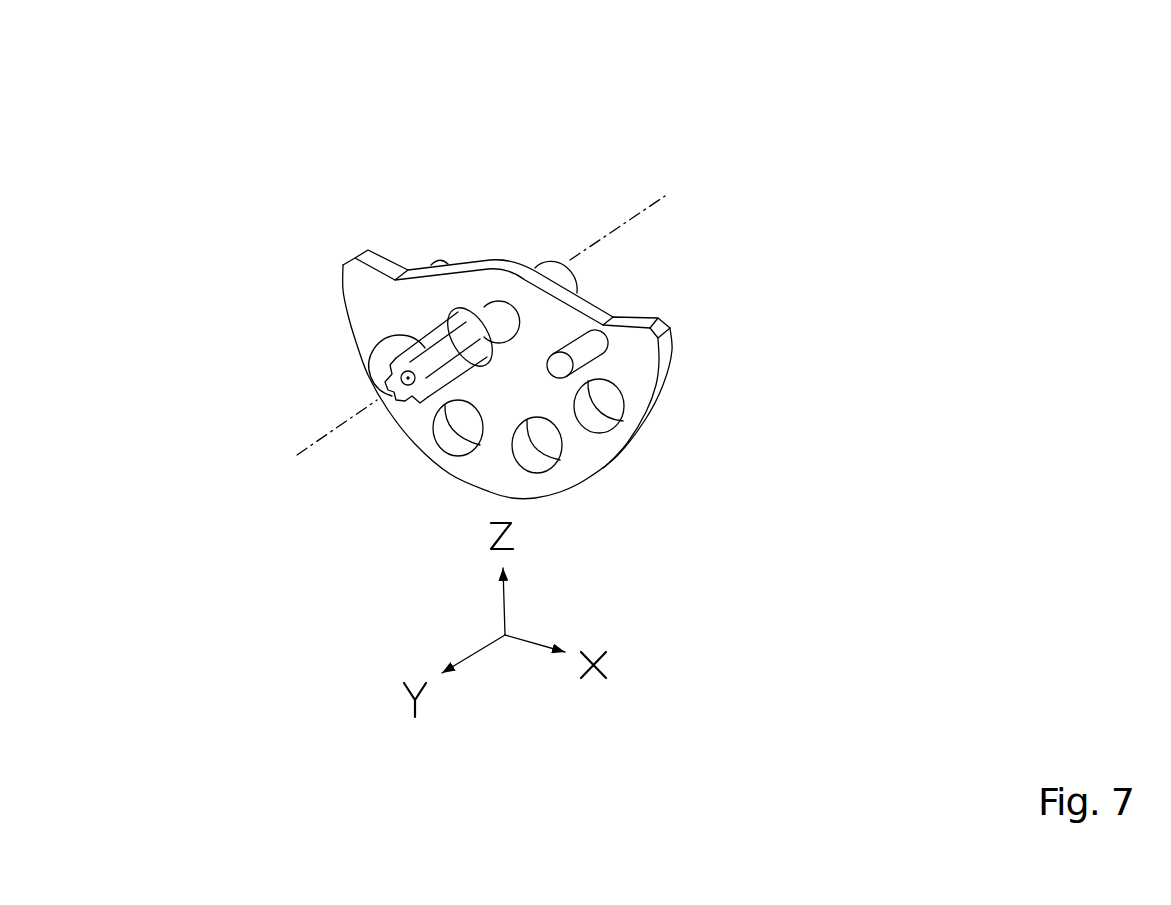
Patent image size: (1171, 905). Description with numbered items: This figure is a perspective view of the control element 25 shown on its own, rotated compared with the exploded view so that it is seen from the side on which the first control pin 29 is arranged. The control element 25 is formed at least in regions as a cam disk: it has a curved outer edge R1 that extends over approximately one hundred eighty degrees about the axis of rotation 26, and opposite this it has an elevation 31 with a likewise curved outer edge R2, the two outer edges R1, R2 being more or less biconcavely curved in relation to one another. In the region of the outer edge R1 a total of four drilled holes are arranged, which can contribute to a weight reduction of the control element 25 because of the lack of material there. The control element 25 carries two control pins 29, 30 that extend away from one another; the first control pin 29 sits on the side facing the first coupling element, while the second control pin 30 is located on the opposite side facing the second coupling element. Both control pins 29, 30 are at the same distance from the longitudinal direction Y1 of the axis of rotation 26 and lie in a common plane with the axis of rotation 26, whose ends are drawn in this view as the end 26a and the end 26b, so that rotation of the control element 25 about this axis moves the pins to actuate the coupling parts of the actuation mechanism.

The control element 25 is at (760, 292).
The axis of rotation 26 is at (487, 294).
The splined end of pin 26a is at (427, 333).
The head end of pin 26b is at (553, 268).
The first control pin 29 is at (587, 352).
The second control pin 30 is at (442, 264).
The elevation 31 is at (530, 300).
The curved outer edge R1 is at (449, 479).
The curved outer edge R2 is at (520, 276).
The longitudinal direction Y1 is at (708, 202).